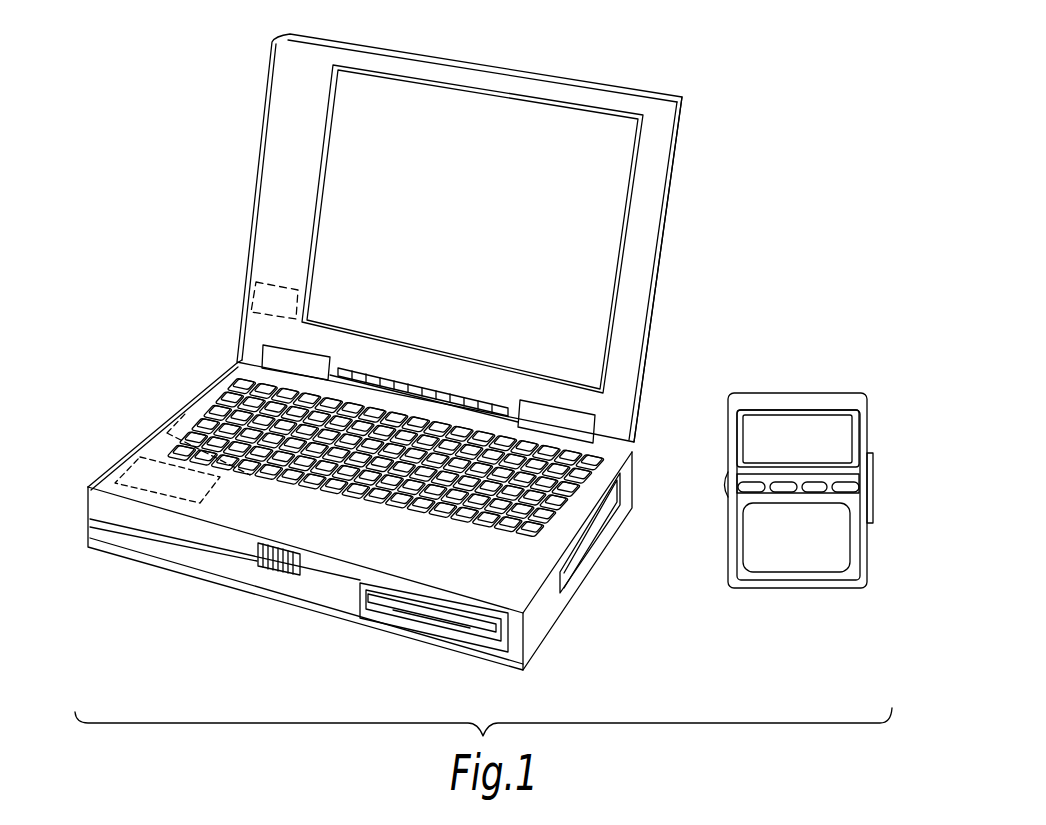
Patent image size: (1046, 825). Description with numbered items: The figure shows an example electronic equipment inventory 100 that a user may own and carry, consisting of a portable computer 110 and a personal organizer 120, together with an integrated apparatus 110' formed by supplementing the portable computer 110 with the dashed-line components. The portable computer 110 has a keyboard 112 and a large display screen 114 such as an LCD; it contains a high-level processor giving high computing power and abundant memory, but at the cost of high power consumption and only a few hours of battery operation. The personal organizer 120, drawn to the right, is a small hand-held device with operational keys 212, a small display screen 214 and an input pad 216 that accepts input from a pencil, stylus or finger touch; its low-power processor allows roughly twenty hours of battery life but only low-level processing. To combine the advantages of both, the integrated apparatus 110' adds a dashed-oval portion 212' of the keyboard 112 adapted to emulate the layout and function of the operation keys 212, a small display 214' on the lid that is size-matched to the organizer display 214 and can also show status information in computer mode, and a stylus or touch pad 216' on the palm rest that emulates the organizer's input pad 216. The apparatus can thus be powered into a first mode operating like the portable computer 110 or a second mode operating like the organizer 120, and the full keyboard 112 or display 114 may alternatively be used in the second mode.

The electronic equipment inventory 100 is at (857, 70).
The portable computer 110 is at (477, 225).
The integrated apparatus 110' is at (697, 269).
The display screen 114 is at (542, 136).
The display 214' is at (246, 267).
The keyboard 112 is at (224, 405).
The touch pad 216' is at (139, 464).
The portion of the keyboard 212' is at (237, 470).
The personal organizer 120 is at (880, 381).
The display screen 214 is at (798, 411).
The operational keys 212 is at (768, 502).
The input pad 216 is at (763, 537).